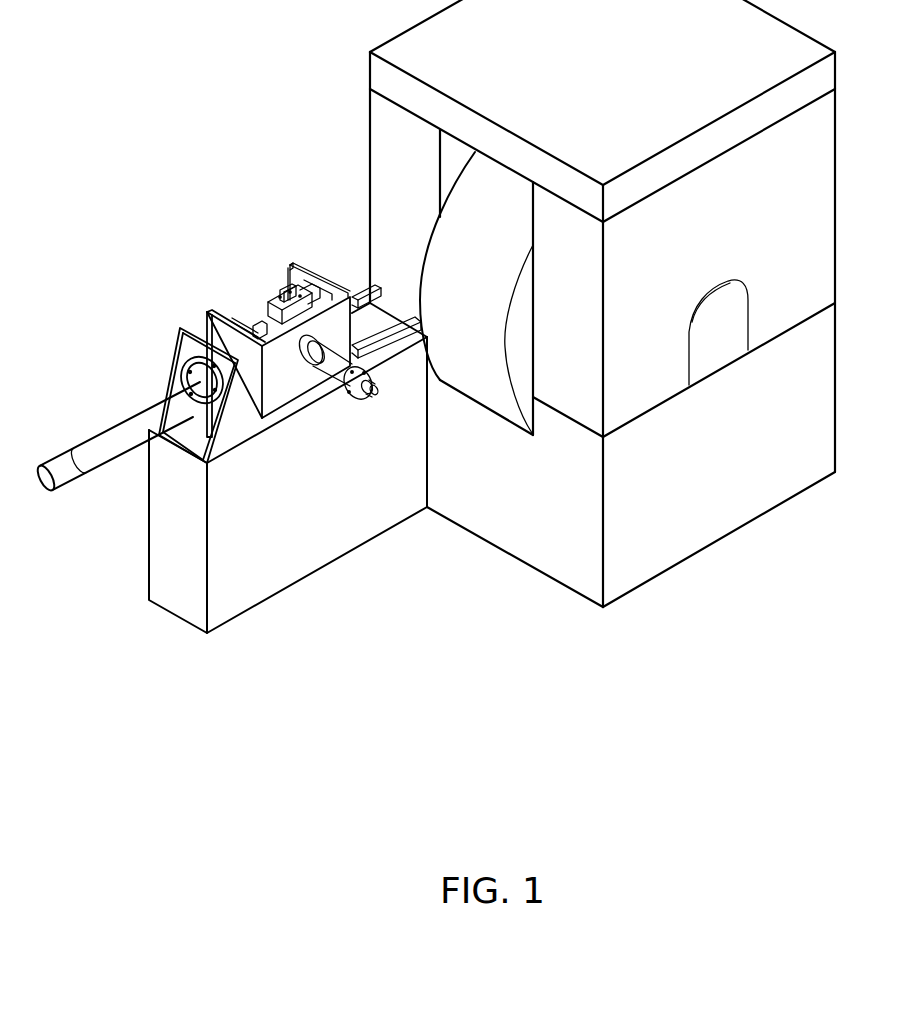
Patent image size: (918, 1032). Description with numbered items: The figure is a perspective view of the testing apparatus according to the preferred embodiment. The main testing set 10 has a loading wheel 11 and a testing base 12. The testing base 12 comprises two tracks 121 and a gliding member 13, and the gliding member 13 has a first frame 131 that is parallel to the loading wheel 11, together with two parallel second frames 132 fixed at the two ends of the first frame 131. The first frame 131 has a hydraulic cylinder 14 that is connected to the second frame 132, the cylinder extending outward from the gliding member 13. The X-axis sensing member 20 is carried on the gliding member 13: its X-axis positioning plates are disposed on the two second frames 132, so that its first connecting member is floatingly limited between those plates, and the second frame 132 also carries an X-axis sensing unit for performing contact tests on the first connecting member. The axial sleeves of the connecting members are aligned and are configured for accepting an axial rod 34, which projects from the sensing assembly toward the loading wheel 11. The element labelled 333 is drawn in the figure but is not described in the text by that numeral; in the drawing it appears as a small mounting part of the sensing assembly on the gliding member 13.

The main testing set 10 is at (343, 84).
The loading wheel 11 is at (457, 233).
The testing base 12 is at (315, 537).
The gliding member 13 is at (273, 412).
The hydraulic cylinder 14 is at (98, 447).
The X-axis sensing member 20 is at (251, 313).
The axial rod 34 is at (330, 400).
The tracks 121 is at (388, 356).
The first frame 131 is at (332, 290).
The second frames 132 is at (290, 266).
The mounting block 333 is at (286, 290).